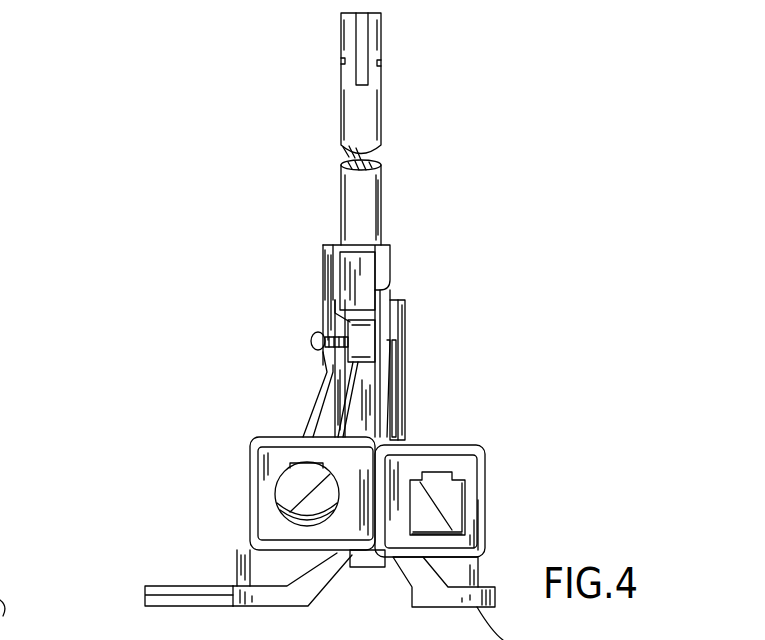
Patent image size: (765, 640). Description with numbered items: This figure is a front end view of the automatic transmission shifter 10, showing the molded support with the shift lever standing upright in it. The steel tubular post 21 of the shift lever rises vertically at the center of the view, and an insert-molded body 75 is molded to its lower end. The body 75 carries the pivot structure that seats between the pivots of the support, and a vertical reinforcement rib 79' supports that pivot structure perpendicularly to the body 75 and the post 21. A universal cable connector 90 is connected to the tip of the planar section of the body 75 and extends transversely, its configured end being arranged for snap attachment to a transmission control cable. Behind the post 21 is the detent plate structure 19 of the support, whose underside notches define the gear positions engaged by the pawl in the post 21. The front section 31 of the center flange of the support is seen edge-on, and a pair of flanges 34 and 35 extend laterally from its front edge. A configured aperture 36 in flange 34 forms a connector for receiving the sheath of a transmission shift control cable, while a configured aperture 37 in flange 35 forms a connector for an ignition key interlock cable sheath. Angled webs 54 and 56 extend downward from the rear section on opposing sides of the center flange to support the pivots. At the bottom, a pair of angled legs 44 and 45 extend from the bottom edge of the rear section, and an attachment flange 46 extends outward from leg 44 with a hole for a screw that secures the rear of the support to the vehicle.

The automatic transmission shifter 10 is at (527, 88).
The post 21 is at (382, 180).
The insert-molded body 75 is at (313, 252).
The detent plate structure 19 is at (405, 300).
The front section 31 is at (405, 362).
The universal cable connector 90 is at (310, 337).
The vertical reinforcement rib 79' is at (277, 368).
The flange 34 is at (255, 437).
The configured aperture 36 is at (290, 480).
The angled web 56 is at (288, 506).
The flange 35 is at (478, 443).
The configured aperture 37 is at (450, 490).
The angled web 54 is at (445, 508).
The angled leg 44 is at (318, 600).
The attachment flange 46 is at (145, 597).
The angled leg 45 is at (403, 587).